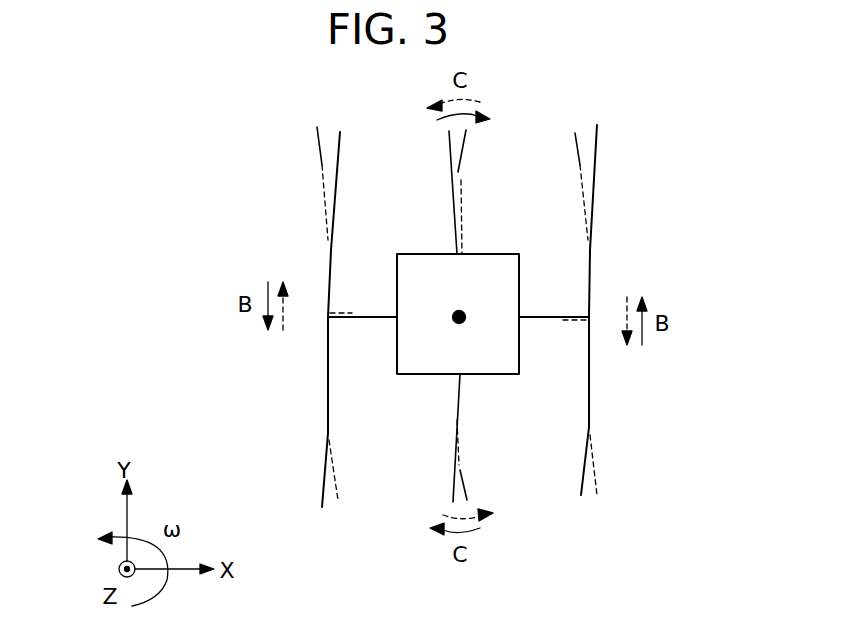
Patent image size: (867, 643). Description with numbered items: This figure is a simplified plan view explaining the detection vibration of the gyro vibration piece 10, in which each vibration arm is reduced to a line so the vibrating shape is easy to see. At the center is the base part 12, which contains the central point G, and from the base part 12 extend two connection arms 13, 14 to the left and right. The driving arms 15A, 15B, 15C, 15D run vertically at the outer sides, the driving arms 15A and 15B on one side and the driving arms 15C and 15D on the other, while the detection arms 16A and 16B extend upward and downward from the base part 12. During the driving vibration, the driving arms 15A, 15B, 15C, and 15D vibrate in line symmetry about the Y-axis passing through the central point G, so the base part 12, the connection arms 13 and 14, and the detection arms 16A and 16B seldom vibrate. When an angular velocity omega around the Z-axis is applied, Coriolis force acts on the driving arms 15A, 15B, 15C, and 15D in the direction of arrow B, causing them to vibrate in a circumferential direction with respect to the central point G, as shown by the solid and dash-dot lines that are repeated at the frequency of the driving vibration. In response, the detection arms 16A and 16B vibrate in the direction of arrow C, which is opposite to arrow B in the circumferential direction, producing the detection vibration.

The gyro vibration piece 10 is at (604, 104).
The base part 12 is at (503, 360).
The connection arm 13 is at (560, 314).
The connection arm 14 is at (360, 313).
The driving arm 15A is at (575, 150).
The driving arm 15B is at (580, 480).
The driving arm 15C is at (316, 150).
The driving arm 15D is at (320, 478).
The detection arm 16A is at (455, 197).
The detection arm 16B is at (457, 445).